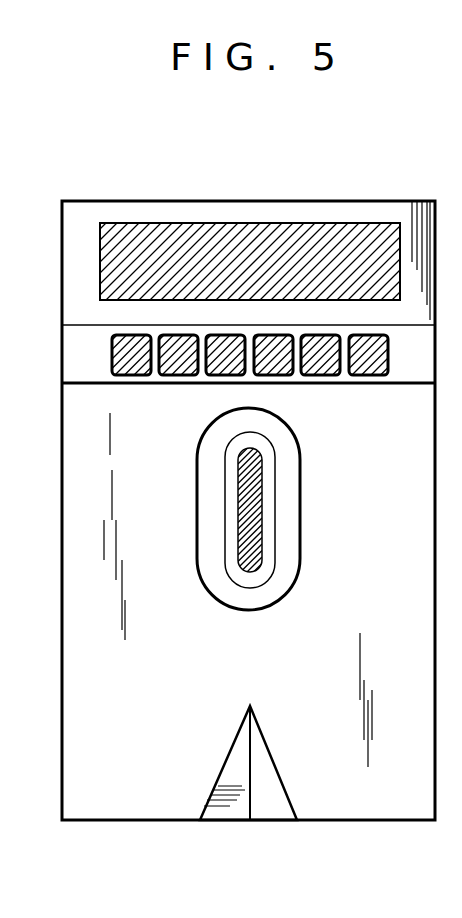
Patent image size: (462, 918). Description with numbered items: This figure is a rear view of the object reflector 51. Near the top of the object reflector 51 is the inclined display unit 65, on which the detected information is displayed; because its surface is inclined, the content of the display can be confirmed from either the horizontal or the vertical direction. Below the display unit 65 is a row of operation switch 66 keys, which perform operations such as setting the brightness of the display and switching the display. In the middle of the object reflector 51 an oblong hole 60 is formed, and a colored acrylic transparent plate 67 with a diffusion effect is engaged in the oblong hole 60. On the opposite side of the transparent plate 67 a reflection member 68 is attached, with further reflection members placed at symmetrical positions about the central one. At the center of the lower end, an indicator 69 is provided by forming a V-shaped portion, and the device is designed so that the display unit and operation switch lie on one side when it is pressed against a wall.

The object reflector 51 is at (52, 278).
The display unit 65 is at (330, 264).
The operation switch 66 is at (128, 358).
The oblong hole 60 is at (199, 525).
The transparent plate 67 is at (287, 577).
The reflection member 68 is at (260, 475).
The indicator 69 is at (270, 798).